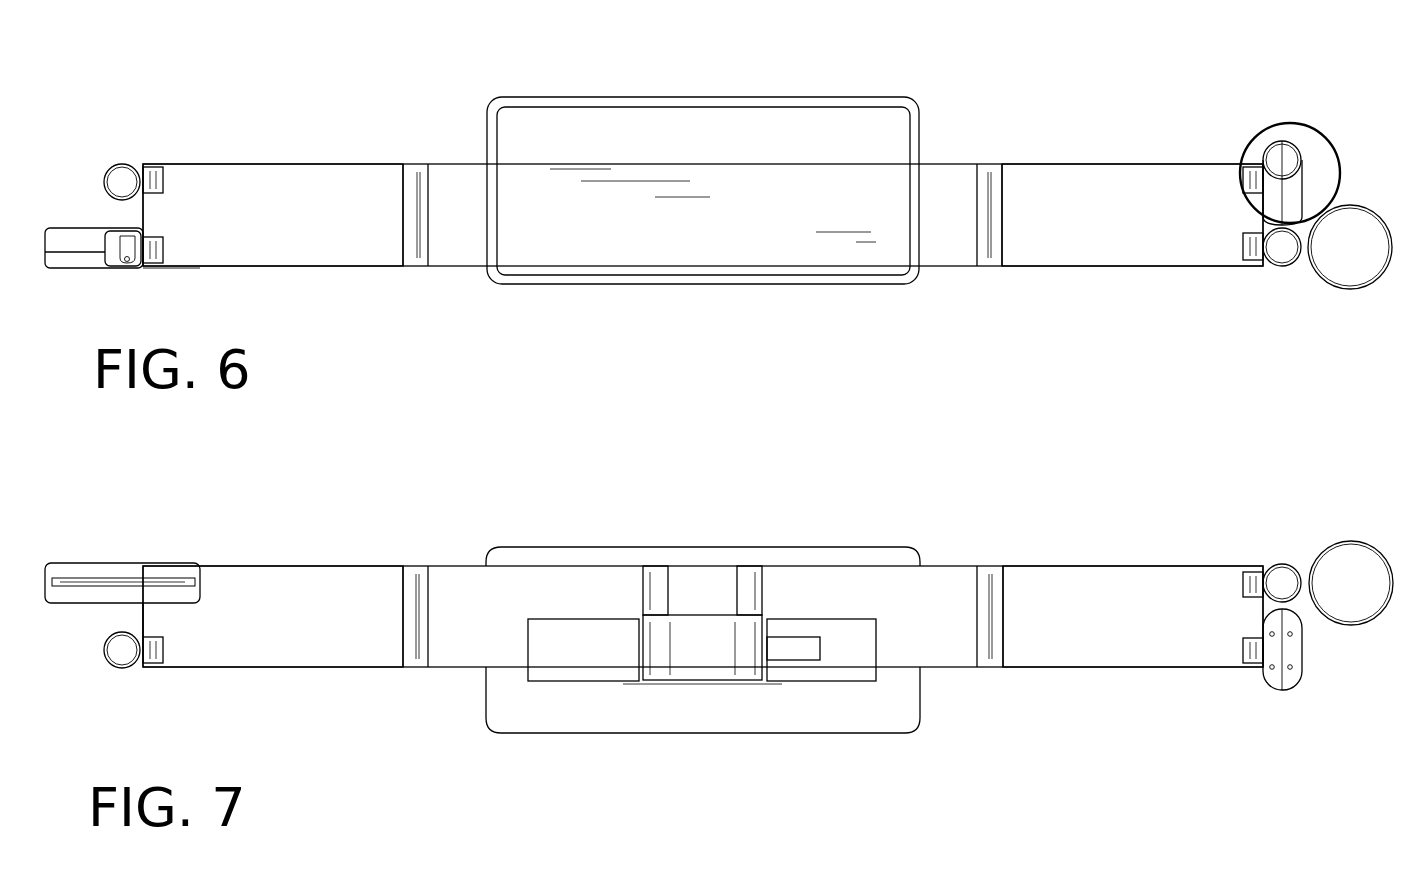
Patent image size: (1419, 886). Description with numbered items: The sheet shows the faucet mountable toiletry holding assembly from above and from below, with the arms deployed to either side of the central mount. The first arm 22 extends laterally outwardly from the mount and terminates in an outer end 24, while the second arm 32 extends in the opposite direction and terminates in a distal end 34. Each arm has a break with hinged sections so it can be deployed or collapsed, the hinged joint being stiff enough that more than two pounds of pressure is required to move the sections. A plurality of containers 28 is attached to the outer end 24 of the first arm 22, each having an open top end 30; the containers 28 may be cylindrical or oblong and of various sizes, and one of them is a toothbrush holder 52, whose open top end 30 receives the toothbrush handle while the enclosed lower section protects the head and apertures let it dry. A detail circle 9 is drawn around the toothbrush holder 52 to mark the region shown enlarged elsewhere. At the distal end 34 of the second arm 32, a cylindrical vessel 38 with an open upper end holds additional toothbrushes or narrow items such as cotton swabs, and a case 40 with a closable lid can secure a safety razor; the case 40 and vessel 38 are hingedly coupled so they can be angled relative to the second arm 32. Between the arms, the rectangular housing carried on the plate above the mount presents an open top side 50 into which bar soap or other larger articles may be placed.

In FIG. 6, the first arm 22 is at (1027, 173).
In FIG. 7, the first arm 22 is at (1062, 648).
In FIG. 6, the outer end 24 is at (1232, 208).
In FIG. 7, the outer end 24 is at (1245, 618).
In FIG. 6, the containers 28 is at (1350, 247).
In FIG. 7, the containers 28 is at (1292, 557).
In FIG. 6, the open top end 30 is at (1285, 262).
In FIG. 7, the open top end 30 is at (1388, 610).
In FIG. 6, the second arm 32 is at (323, 160).
In FIG. 7, the second arm 32 is at (232, 570).
In FIG. 7, the distal end 34 is at (143, 617).
In FIG. 6, the vessel 38 is at (123, 160).
In FIG. 6, the case 40 is at (58, 235).
In FIG. 6, the open top side 50 is at (812, 147).
In FIG. 7, the open top side 50 is at (703, 640).
In FIG. 6, the toothbrush holder 52 is at (1303, 190).
In FIG. 6, the detail circle 9 is at (1318, 130).